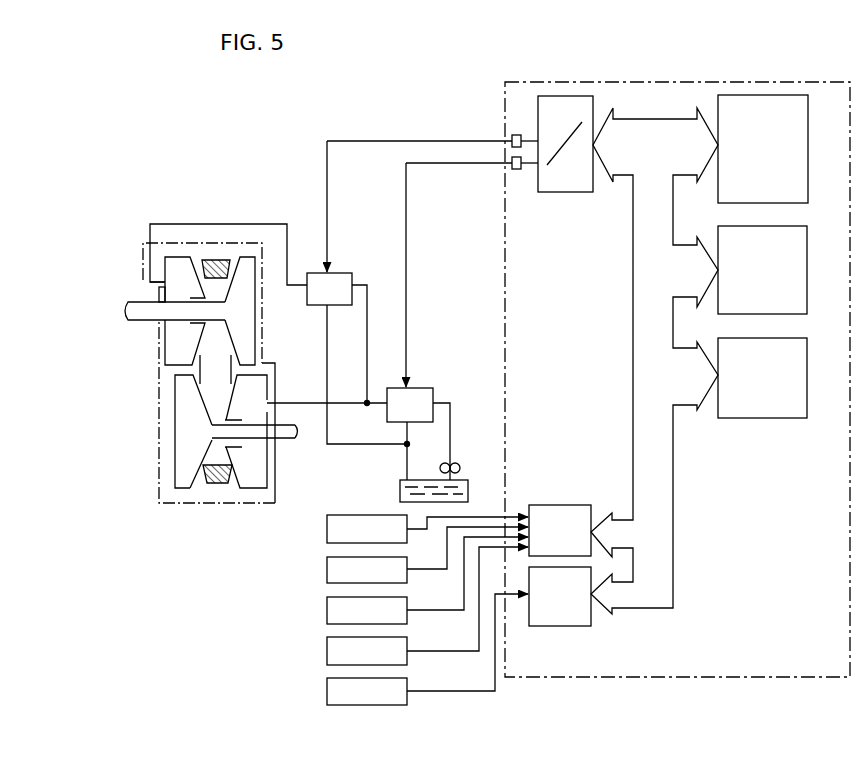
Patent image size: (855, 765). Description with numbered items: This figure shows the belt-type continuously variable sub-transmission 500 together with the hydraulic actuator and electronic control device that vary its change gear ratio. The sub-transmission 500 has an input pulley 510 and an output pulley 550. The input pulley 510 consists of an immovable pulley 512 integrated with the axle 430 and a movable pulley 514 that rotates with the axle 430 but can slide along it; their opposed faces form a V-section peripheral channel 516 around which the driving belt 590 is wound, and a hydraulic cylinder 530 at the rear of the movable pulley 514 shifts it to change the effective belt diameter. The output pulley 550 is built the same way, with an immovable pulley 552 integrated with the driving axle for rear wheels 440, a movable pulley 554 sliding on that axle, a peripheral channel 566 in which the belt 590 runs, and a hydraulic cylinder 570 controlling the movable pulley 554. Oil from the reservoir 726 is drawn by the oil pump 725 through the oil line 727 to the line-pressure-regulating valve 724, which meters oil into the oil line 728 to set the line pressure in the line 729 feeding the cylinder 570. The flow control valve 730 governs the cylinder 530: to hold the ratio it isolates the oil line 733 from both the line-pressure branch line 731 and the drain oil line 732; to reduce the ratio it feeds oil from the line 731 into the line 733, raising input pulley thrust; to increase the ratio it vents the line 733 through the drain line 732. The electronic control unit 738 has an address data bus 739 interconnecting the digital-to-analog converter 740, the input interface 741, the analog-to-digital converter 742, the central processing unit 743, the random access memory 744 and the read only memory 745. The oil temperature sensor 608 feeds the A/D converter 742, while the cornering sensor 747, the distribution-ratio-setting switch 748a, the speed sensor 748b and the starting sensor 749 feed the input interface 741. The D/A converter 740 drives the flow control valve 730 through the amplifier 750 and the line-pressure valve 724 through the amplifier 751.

The axle 430 is at (141, 320).
The driving axle for rear wheels 440 is at (296, 438).
The sub-transmission 500 is at (158, 386).
The input pulley 510 is at (201, 252).
The immovable pulley 512 is at (249, 255).
The movable pulley 514 is at (168, 257).
The peripheral channel 516 is at (212, 288).
The hydraulic cylinder 530 is at (173, 270).
The output pulley 550 is at (198, 488).
The immovable pulley 552 is at (178, 488).
The movable pulley 554 is at (243, 488).
The peripheral channel 566 is at (212, 457).
The hydraulic cylinder 570 is at (258, 390).
The driving belt 590 is at (216, 260).
The oil temperature sensor 608 is at (327, 691).
The line-pressure-regulating valve 724 is at (421, 389).
The oil pump 725 is at (458, 464).
The reservoir 726 is at (400, 492).
The oil line 727 is at (451, 431).
The oil line 728 is at (407, 430).
The line 729 is at (347, 405).
The flow control valve 730 is at (338, 279).
The oil line of line pressure 731 is at (367, 322).
The drain oil line 732 is at (329, 367).
The oil line 733 is at (280, 224).
The electronic control unit 738 is at (714, 80).
The address data bus 739 is at (633, 328).
The digital-to-analog converter 740 is at (568, 184).
The input interface 741 is at (560, 512).
The analog-to-digital converter 742 is at (563, 624).
The central processing unit 743 is at (808, 130).
The random access memory 744 is at (808, 262).
The read only memory 745 is at (808, 374).
The cornering sensor 747 is at (327, 529).
The distribution-ratio-setting switch 748a is at (327, 569).
The speed sensor 748b is at (327, 610).
The starting sensor 749 is at (327, 651).
The amplifier 750 is at (512, 136).
The amplifier 751 is at (512, 168).